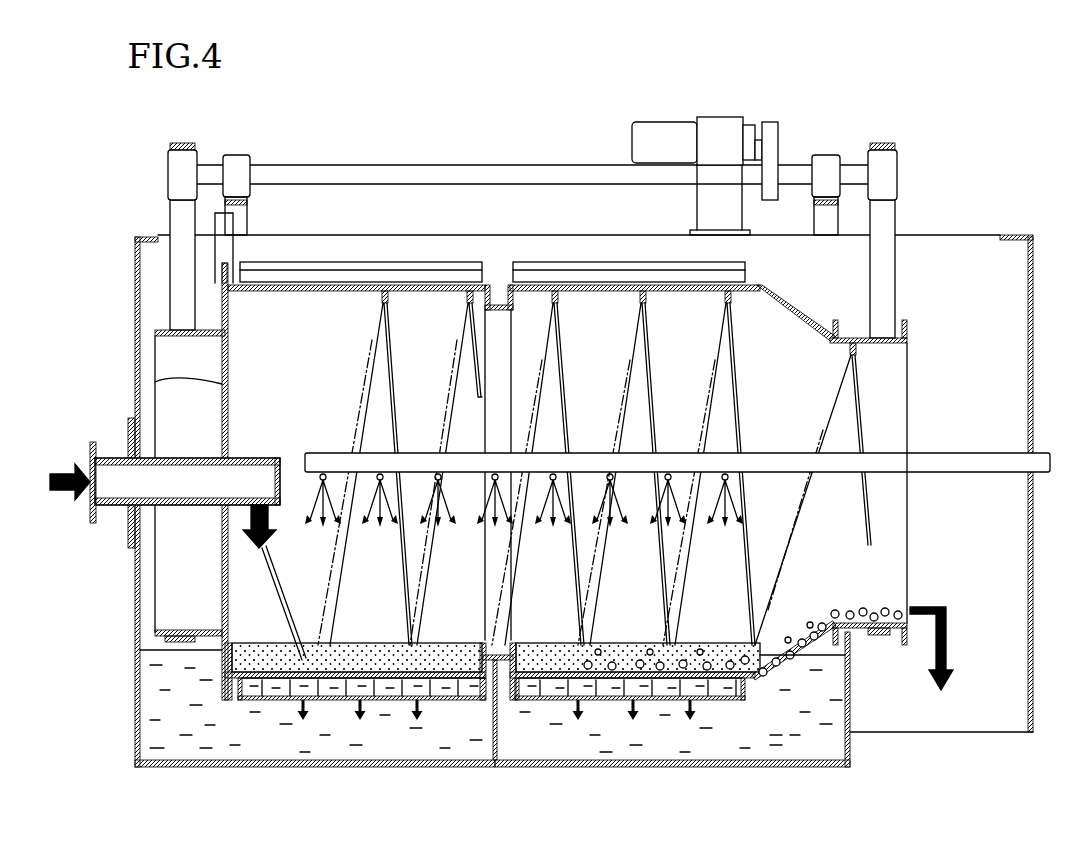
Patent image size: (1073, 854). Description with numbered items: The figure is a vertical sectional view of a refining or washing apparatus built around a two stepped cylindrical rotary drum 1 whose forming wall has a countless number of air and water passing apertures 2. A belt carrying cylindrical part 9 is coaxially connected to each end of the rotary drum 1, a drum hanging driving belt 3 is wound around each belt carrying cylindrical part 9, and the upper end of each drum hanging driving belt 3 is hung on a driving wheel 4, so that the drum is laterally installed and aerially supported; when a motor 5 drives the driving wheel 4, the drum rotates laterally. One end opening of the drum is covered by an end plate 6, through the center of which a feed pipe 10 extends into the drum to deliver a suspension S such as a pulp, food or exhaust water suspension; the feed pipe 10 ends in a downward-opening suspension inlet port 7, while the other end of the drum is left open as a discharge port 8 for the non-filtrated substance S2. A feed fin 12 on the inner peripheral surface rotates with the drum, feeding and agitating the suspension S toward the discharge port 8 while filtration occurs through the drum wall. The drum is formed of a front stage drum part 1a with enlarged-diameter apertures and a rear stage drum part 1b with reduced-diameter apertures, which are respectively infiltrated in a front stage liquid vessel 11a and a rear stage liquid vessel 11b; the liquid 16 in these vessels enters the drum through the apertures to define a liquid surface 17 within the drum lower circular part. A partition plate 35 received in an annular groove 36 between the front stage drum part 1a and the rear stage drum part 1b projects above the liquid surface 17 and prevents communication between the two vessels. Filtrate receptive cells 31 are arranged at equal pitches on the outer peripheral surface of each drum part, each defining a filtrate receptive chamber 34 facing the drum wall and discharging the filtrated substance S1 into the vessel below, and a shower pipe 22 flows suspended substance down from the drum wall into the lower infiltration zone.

The rotary drum 1 is at (446, 283).
The front stage drum part 1a is at (336, 282).
The rear stage drum part 1b is at (612, 282).
The air and water passing apertures 2 is at (300, 293).
The drum hanging driving belt 3 is at (178, 222).
The driving wheel 4 is at (178, 172).
The motor 5 is at (630, 137).
The end plate 6 is at (222, 385).
The suspension inlet port 7 is at (268, 520).
The discharge port 8 is at (904, 524).
The belt carrying cylindrical part 9 is at (155, 332).
The feed pipe 10 is at (188, 458).
The front stage liquid vessel 11a is at (268, 768).
The rear stage liquid vessel 11b is at (638, 768).
The feed fin 12 is at (422, 568).
The liquid 16 is at (388, 745).
The liquid surface 17 is at (812, 655).
The shower pipe 22 is at (940, 463).
The filtrate receptive cell 31 is at (372, 265).
The filtrate receptive chamber 34 is at (341, 702).
The partition plate 35 is at (497, 722).
The annular groove 36 is at (498, 300).
The suspension S is at (65, 476).
The filtrated substance S1 is at (436, 702).
The non-filtrated substance S2 is at (885, 606).